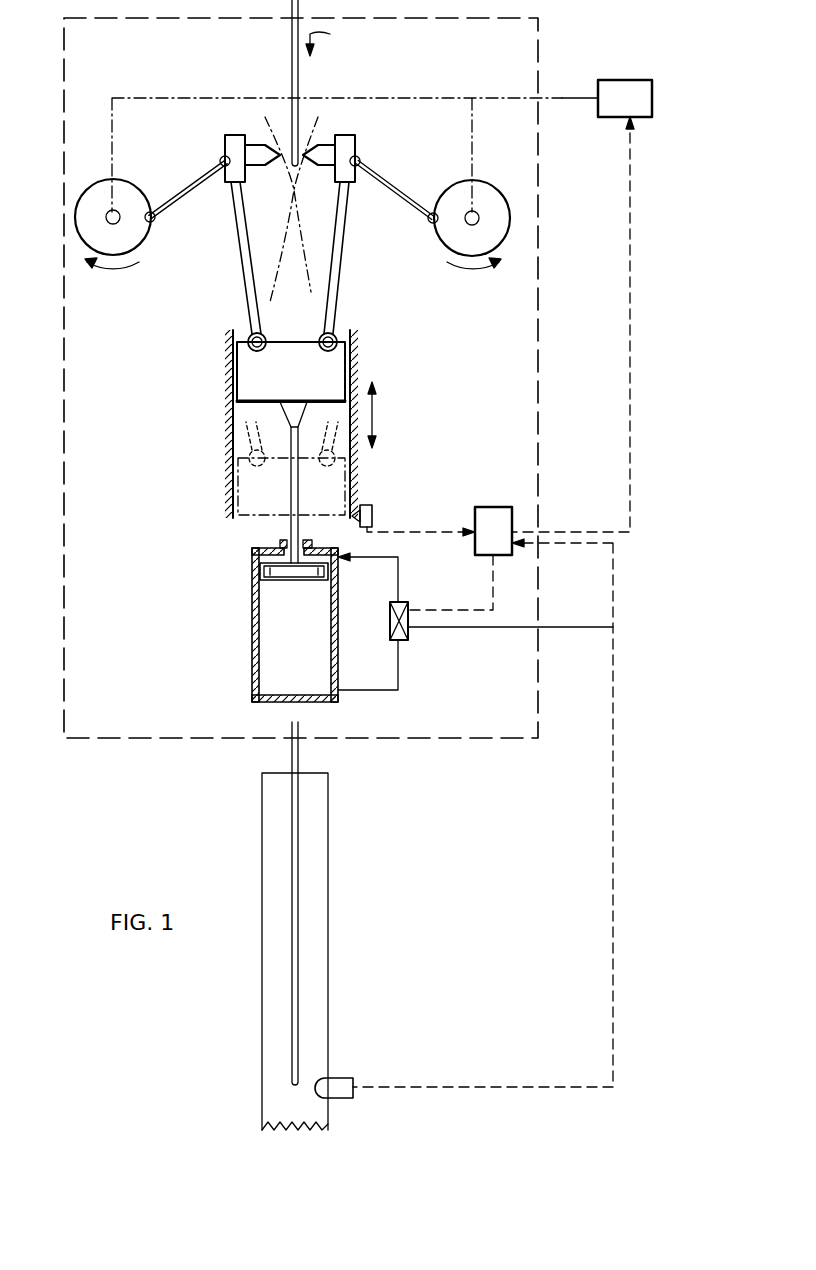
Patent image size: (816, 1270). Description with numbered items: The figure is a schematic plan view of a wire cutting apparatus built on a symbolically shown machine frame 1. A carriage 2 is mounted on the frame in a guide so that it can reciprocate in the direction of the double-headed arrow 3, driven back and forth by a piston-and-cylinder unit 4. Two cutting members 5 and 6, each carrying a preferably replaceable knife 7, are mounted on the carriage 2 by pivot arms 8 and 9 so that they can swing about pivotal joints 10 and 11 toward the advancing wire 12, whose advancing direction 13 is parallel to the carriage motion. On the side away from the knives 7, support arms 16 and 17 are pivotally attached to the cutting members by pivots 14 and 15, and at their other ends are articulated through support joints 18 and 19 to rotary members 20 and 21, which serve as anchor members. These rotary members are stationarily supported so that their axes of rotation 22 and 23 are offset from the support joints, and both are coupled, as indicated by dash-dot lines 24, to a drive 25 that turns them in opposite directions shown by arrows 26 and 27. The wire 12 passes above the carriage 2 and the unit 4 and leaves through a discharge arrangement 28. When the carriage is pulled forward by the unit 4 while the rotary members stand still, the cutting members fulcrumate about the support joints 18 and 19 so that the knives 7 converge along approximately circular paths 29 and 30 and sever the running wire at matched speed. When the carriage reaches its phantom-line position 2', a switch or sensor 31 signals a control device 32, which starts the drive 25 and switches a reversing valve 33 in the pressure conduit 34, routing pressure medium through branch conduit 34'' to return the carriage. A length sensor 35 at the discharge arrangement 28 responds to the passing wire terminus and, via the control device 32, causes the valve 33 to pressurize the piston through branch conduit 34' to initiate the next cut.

The machine frame 1 is at (485, 20).
The carriage 2 is at (268, 452).
The phantom-line position of carriage 2' is at (275, 483).
The double-headed arrow 3 is at (375, 410).
The piston-and-cylinder unit 4 is at (252, 640).
The cutting member 5 is at (231, 185).
The cutting member 6 is at (346, 185).
The knife 7 is at (265, 165).
The pivot arm 8 is at (250, 282).
The pivot arm 9 is at (337, 272).
The pivotal joint 10 is at (257, 352).
The pivotal joint 11 is at (328, 352).
The wire 12 is at (290, 62).
The advancing direction 13 is at (332, 41).
The pivot 14 is at (221, 157).
The pivot 15 is at (359, 157).
The support arm 16 is at (190, 188).
The support arm 17 is at (398, 192).
The support joint 18 is at (150, 211).
The support joint 19 is at (433, 212).
The rotary member 20 is at (100, 190).
The rotary member 21 is at (490, 195).
The axis of rotation 22 is at (113, 217).
The axis of rotation 23 is at (472, 218).
The dash-dot lines 24 is at (405, 98).
The drive 25 is at (608, 92).
The arrow 26 is at (110, 270).
The arrow 27 is at (470, 270).
The discharge arrangement 28 is at (328, 883).
The circular path 29 is at (283, 204).
The circular path 30 is at (311, 292).
The switch or sensor 31 is at (372, 510).
The control device 32 is at (500, 515).
The reversing valve 33 is at (408, 637).
The pressure conduit 34 is at (510, 654).
The branch conduit 34' is at (398, 577).
The branch conduit 34'' is at (385, 680).
The length sensor 35 is at (345, 1080).